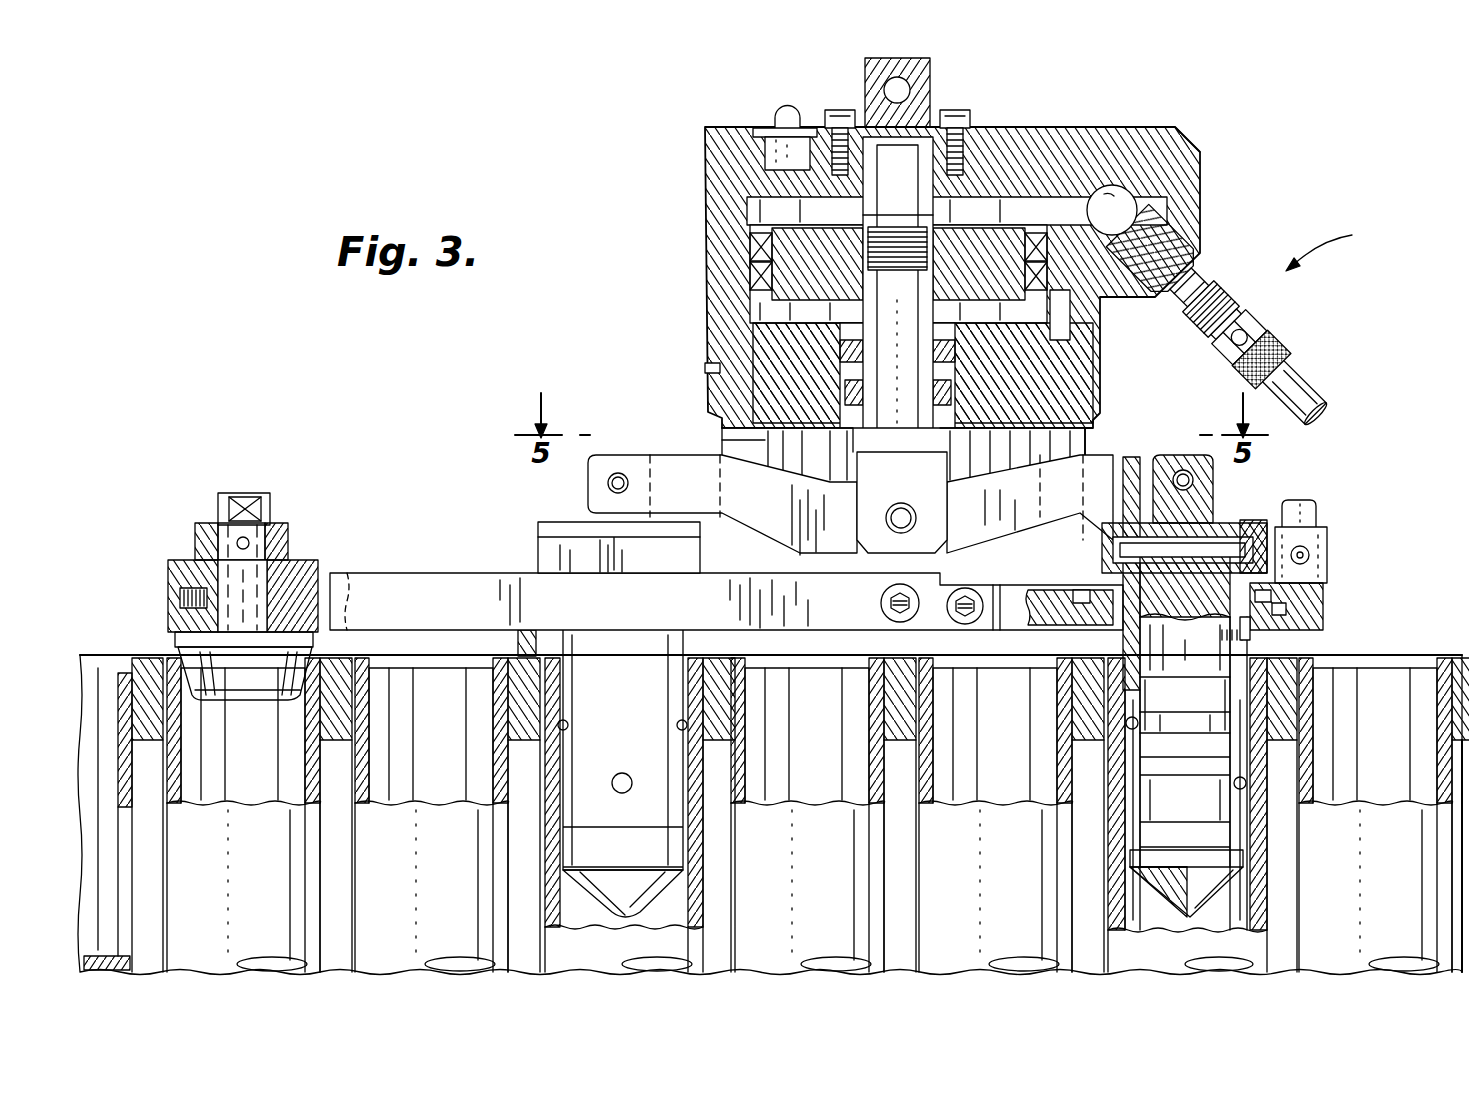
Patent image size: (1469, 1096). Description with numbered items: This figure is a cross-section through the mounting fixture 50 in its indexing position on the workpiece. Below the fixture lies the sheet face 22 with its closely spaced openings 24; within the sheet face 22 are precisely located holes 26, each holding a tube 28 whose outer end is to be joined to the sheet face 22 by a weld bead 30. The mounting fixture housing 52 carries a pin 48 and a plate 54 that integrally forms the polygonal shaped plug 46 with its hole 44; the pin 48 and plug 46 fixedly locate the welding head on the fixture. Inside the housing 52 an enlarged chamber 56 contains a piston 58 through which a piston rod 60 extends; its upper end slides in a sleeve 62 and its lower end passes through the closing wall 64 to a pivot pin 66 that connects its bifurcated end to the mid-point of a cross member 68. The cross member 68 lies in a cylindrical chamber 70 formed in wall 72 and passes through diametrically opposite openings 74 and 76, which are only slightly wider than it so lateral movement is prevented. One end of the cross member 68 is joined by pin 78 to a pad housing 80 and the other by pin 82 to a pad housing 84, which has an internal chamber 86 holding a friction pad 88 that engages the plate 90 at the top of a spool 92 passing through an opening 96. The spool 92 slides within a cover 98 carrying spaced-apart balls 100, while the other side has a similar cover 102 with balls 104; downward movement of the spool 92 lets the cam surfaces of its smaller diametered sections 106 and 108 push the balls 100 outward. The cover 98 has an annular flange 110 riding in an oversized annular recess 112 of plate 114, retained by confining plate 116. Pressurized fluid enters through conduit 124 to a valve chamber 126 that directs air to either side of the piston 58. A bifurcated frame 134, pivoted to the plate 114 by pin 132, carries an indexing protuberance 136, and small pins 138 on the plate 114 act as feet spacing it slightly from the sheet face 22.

The sheet face 22 is at (308, 745).
The openings 24 is at (500, 745).
The holes 26 is at (1452, 704).
The tube 28 is at (425, 911).
The weld bead 30 is at (1440, 660).
The hole 44 is at (890, 84).
The polygonal shaped plug 46 is at (922, 74).
The pin 48 is at (788, 117).
The mounting fixture 50 is at (1334, 245).
The mounting fixture housing 52 is at (1083, 127).
The plate 54 is at (966, 118).
The enlarged chamber 56 is at (1177, 127).
The piston 58 is at (757, 243).
The piston rod 60 is at (987, 205).
The sleeve 62 is at (846, 112).
The closing wall 64 is at (1005, 380).
The pivot pin 66 is at (905, 504).
The cross member 68 is at (997, 545).
The chamber 70 is at (1042, 445).
The wall 72 is at (742, 450).
The opening 74 is at (802, 452).
The opening 76 is at (1000, 440).
The pin 78 is at (608, 484).
The pad housing 80 is at (555, 530).
The pin 82 is at (1213, 478).
The pad housing 84 is at (1250, 522).
The internal chamber 86 is at (1283, 548).
The friction pad 88 is at (1312, 512).
The plate 90 is at (1253, 548).
The spool 92 is at (1250, 565).
The opening 96 is at (1264, 580).
The cover 98 is at (1227, 760).
The balls 100 is at (1126, 724).
The cover 102 is at (658, 845).
The balls 104 is at (632, 786).
The smaller diametered section 106 is at (1217, 740).
The smaller diametered section 108 is at (1210, 805).
The annular flange 110 is at (1292, 630).
The oversized annular recess 112 is at (1292, 622).
The plate 114 is at (1013, 622).
The confining plate 116 is at (1287, 608).
The conduit 124 is at (1305, 372).
The valve chamber 126 is at (1108, 192).
The pin 132 is at (880, 603).
The bifurcated frame 134 is at (432, 573).
The indexing protuberance 136 is at (182, 658).
The pins 138 is at (528, 640).